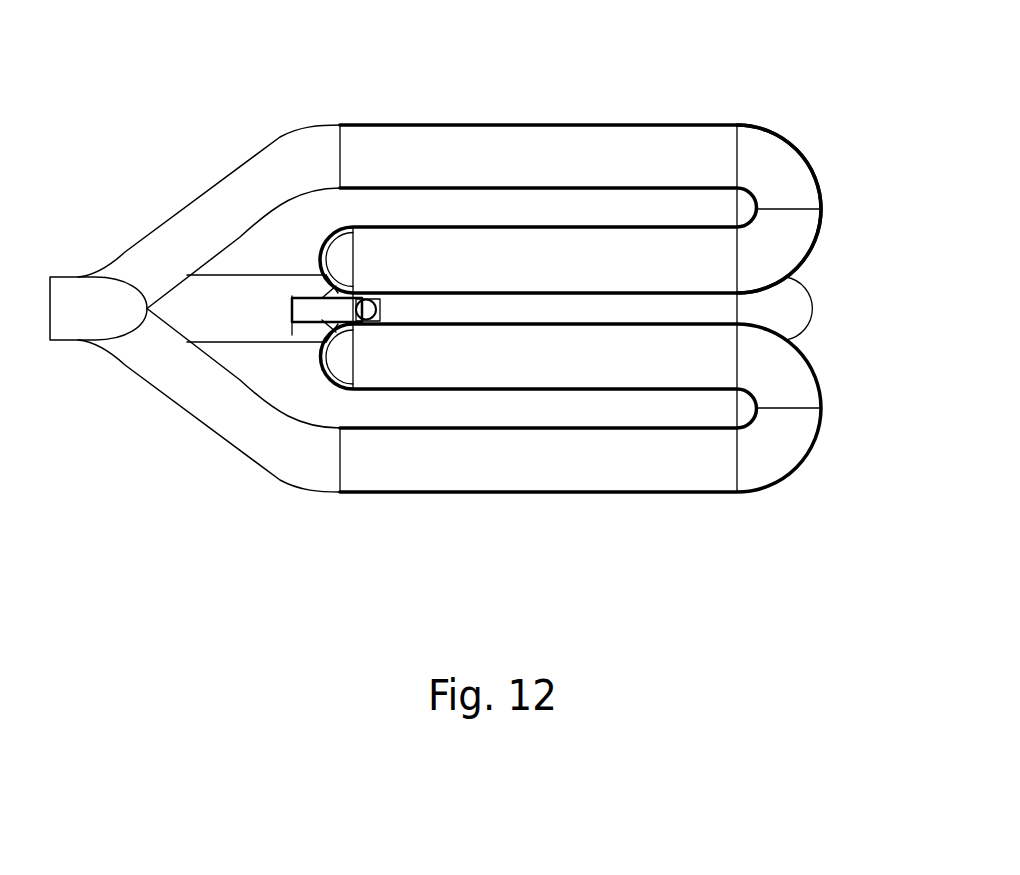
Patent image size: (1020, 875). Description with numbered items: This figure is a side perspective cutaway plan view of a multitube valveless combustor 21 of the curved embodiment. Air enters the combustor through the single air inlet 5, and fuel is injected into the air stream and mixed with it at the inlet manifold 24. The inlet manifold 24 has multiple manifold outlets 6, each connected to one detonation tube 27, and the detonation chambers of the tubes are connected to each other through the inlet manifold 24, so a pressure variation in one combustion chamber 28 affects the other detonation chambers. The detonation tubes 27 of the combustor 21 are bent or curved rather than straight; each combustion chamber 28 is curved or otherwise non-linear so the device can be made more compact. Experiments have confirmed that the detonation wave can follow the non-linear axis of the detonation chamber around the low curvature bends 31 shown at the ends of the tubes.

The multitube valveless combustor 21 is at (456, 324).
The detonation tube 27 is at (601, 135).
The combustion chamber 28 is at (400, 390).
The low curvature bend 31 is at (805, 160).
The air inlet 5 is at (292, 322).
The inlet manifold 24 is at (373, 299).
The manifold outlet 6 is at (367, 322).